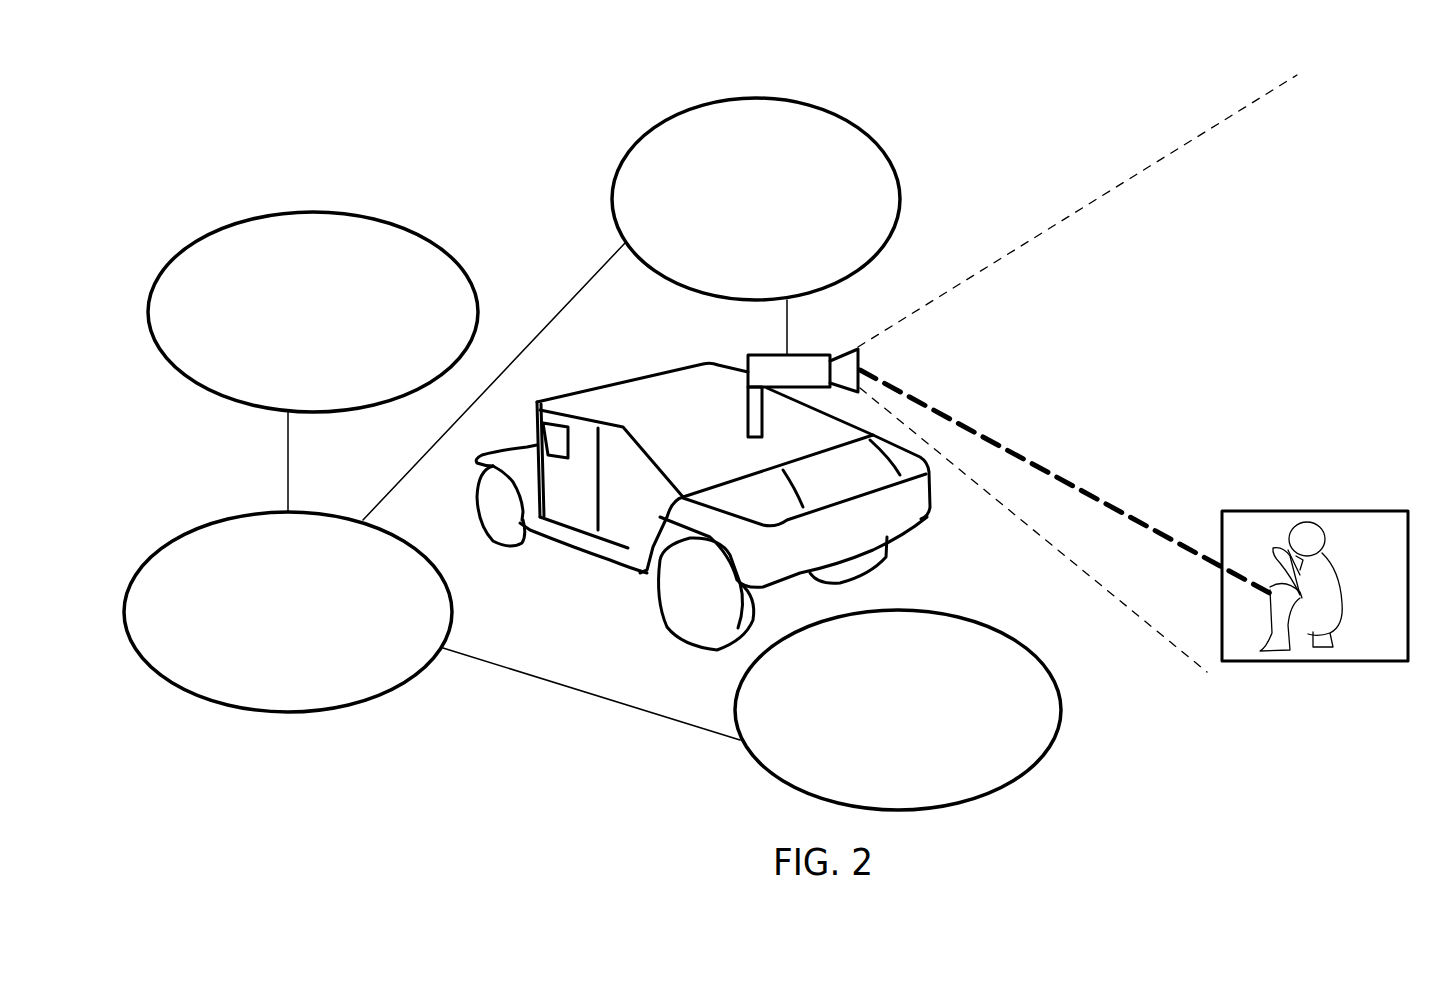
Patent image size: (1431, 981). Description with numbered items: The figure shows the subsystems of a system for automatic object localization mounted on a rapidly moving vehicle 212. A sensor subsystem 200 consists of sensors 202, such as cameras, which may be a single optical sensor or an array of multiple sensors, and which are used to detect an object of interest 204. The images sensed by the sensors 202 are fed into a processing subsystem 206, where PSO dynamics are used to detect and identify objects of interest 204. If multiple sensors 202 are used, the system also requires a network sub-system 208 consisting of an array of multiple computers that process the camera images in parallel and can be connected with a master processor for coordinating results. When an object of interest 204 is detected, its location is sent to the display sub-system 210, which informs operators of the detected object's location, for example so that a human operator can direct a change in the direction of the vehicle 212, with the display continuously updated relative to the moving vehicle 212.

The sensor subsystem 200 is at (842, 122).
The sensor 202 is at (805, 355).
The object of interest 204 is at (1343, 630).
The processing subsystem 206 is at (350, 707).
The network sub-system 208 is at (970, 800).
The display sub-system 210 is at (340, 208).
The vehicle 212 is at (648, 375).